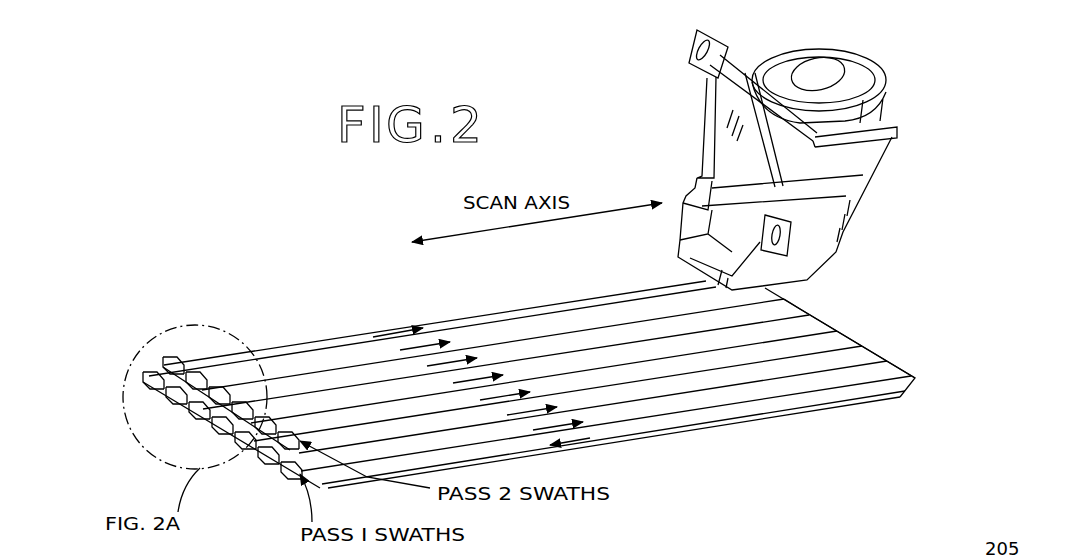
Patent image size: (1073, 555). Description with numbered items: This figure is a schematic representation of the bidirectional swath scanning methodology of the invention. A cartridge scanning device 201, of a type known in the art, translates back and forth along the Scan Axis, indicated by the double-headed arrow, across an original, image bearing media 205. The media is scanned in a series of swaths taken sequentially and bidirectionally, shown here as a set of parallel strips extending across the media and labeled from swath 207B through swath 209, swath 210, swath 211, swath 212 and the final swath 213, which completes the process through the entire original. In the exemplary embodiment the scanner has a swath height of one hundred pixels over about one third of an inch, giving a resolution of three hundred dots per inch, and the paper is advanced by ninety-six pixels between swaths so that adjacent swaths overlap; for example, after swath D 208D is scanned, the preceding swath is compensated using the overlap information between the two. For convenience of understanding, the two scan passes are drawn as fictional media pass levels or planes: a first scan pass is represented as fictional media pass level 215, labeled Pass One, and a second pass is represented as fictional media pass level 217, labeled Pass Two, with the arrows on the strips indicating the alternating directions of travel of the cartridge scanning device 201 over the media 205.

The cartridge scanning device 201 is at (932, 110).
The image bearing media 205 is at (902, 421).
The swath 207B is at (482, 320).
The swath D 208D is at (550, 328).
The swath 209 is at (790, 299).
The swath 210 is at (822, 319).
The swath 211 is at (845, 338).
The swath 212 is at (868, 352).
The swath 213 is at (900, 372).
The fictional media pass level 215 is at (724, 442).
The fictional media pass level 217 is at (360, 325).